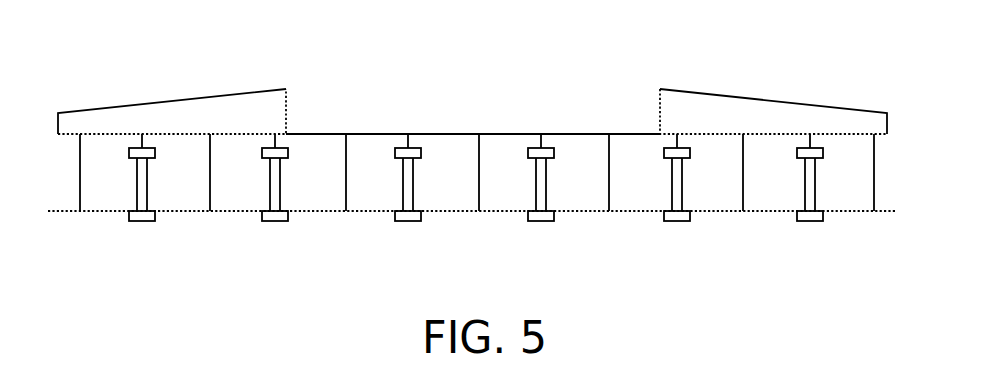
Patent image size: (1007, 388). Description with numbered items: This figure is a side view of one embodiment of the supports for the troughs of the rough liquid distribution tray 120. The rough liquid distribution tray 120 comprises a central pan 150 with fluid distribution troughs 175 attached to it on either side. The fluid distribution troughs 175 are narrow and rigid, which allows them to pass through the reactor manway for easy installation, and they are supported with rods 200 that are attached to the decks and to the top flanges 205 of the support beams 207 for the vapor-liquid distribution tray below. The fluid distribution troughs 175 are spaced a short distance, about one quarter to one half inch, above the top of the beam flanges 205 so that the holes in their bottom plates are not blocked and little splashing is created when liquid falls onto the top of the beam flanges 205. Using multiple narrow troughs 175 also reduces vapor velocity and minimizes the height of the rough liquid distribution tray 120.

The rough liquid distribution tray 120 is at (78, 118).
The fluid distribution troughs 175 is at (270, 100).
The central pan 150 is at (443, 134).
The rods 200 is at (145, 138).
The support beams 207 is at (147, 185).
The top flanges 205 is at (288, 155).